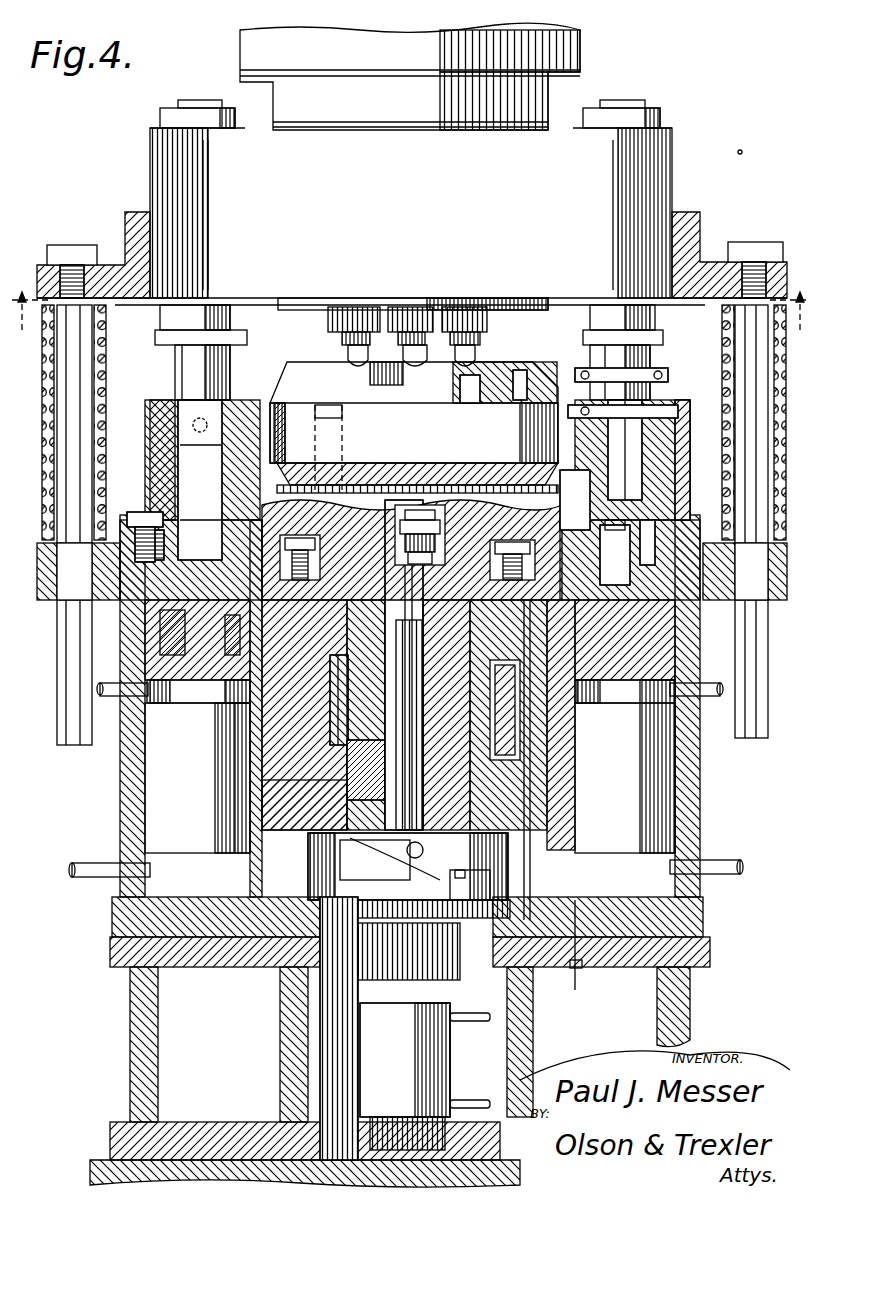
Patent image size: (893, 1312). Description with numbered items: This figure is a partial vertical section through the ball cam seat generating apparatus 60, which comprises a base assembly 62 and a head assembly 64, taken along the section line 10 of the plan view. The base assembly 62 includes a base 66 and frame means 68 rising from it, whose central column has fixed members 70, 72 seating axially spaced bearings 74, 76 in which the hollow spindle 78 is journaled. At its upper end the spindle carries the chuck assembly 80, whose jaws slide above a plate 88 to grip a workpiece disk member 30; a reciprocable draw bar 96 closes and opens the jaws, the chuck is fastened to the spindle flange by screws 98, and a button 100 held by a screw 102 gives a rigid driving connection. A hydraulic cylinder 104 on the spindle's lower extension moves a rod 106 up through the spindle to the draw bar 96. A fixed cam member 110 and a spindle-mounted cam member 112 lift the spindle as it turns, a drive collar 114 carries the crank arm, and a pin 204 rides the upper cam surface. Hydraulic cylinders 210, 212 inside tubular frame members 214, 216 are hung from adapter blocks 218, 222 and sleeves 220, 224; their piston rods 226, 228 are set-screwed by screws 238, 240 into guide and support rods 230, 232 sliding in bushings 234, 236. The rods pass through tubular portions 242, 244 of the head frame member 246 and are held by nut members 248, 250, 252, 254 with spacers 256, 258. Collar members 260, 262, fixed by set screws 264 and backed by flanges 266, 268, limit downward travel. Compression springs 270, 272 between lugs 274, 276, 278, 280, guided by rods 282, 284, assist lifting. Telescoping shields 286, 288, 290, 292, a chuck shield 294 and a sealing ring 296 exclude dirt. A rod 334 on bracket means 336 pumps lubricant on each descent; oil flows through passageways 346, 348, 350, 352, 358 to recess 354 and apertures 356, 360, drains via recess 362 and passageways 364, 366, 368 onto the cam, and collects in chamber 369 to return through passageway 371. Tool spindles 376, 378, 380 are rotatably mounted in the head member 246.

The section line 10 is at (413, 323).
The disk member 30 is at (485, 362).
The apparatus 60 is at (740, 150).
The base assembly 62 is at (122, 995).
The head assembly 64 is at (622, 92).
The base 66 is at (128, 1035).
The frame means 68 is at (122, 822).
The fixed frame member 70 is at (215, 776).
The fixed frame member 72 is at (330, 672).
The bearing 74 is at (248, 798).
The bearing 76 is at (350, 604).
The hollow spindle 78 is at (455, 595).
The chuck assembly 80 is at (548, 360).
The plate 88 is at (272, 400).
The draw bar 96 is at (430, 500).
The screws 98 is at (345, 452).
The button 100 is at (440, 500).
The screw 102 is at (490, 556).
The hydraulic cylinder 104 is at (450, 1040).
The rod 106 is at (365, 720).
The cam member 110 is at (340, 1000).
The cam member 112 is at (385, 770).
The drive collar 114 is at (340, 700).
The pin 204 is at (420, 870).
The hydraulic cylinder 210 is at (145, 755).
The hydraulic cylinder 212 is at (660, 790).
The tubular frame member 214 is at (120, 790).
The tubular frame member 216 is at (700, 758).
The adapter block 218 is at (178, 703).
The sleeve 220 is at (127, 515).
The adapter block 222 is at (630, 703).
The sleeve member 224 is at (712, 520).
The piston rod 226 is at (118, 630).
The piston rod 228 is at (640, 590).
The guide and support rod 230 is at (180, 445).
The guide and support rod 232 is at (540, 500).
The bushing 234 is at (158, 470).
The bushing 236 is at (655, 480).
The set screw 238 is at (180, 500).
The set screw 240 is at (660, 560).
The tubular portion 242 is at (153, 187).
The tubular portion 244 is at (668, 186).
The head frame member 246 is at (150, 158).
The nut member 248 is at (245, 338).
The nut member 250 is at (170, 115).
The nut member 252 is at (640, 345).
The nut member 254 is at (655, 108).
The spacer 256 is at (232, 318).
The spacer 258 is at (657, 315).
The collar member 260 is at (182, 360).
The collar member 262 is at (660, 406).
The set screws 264 is at (198, 350).
The flange 266 is at (230, 400).
The flange 268 is at (650, 395).
The compression spring 270 is at (132, 395).
The compression spring 272 is at (640, 375).
The lug 274 is at (37, 262).
The lug 276 is at (75, 650).
The lug 278 is at (775, 242).
The lug 280 is at (760, 600).
The guide rod 282 is at (120, 372).
The guide rod 284 is at (650, 336).
The tubular shield 286 is at (262, 452).
The tubular shield 288 is at (262, 432).
The shield 290 is at (665, 450).
The shield 292 is at (676, 440).
The shield 294 is at (570, 475).
The sealing ring 296 is at (298, 560).
The rod 334 is at (625, 440).
The bracket means 336 is at (580, 380).
The passageway 346 is at (577, 940).
The passageway 348 is at (548, 730).
The passageway 350 is at (535, 600).
The passageway 352 is at (540, 600).
The recess 354 is at (430, 640).
The aperture 356 is at (470, 585).
The passageway 358 is at (527, 775).
The aperture 360 is at (445, 760).
The annular recess 362 is at (330, 660).
The passageway 364 is at (450, 650).
The passageway 366 is at (395, 740).
The passageway 368 is at (550, 805).
The chamber 369 is at (540, 825).
The passageway 371 is at (466, 874).
The spindle 376 is at (410, 305).
The spindle 378 is at (505, 305).
The spindle 380 is at (335, 305).